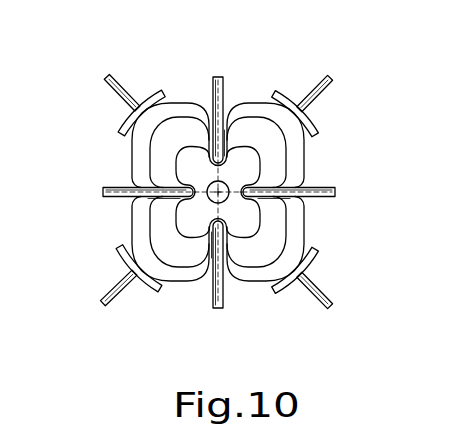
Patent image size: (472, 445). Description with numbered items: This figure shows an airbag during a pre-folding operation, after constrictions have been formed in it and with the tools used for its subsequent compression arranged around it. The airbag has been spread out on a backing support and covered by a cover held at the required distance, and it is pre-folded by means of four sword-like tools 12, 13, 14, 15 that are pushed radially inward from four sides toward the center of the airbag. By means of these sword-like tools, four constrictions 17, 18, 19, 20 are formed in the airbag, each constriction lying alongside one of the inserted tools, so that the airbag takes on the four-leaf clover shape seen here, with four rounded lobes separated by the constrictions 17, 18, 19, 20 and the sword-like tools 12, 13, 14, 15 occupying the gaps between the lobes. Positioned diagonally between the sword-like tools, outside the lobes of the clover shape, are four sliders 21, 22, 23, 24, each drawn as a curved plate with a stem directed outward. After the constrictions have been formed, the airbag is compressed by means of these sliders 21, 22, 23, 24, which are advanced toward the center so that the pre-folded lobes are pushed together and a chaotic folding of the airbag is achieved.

The sword-like tool 12 is at (212, 98).
The sword-like tool 13 is at (326, 188).
The sword-like tool 14 is at (222, 305).
The sword-like tool 15 is at (108, 187).
The constriction 17 is at (227, 108).
The constriction 18 is at (298, 201).
The constriction 19 is at (208, 263).
The constriction 20 is at (135, 198).
The slider 21 is at (312, 122).
The slider 22 is at (311, 259).
The slider 23 is at (120, 257).
The slider 24 is at (144, 94).